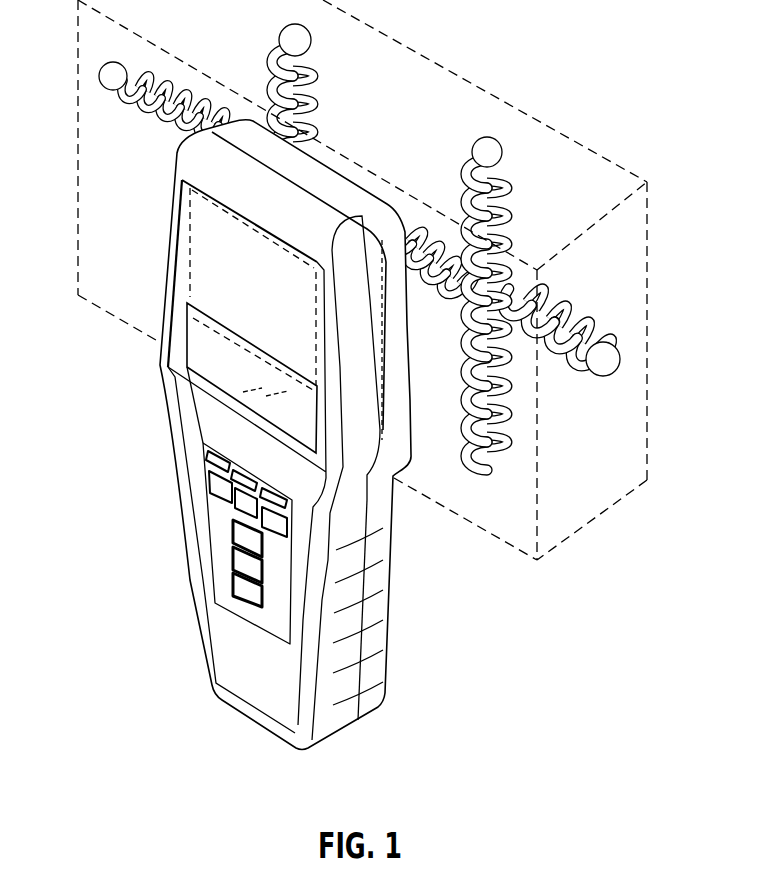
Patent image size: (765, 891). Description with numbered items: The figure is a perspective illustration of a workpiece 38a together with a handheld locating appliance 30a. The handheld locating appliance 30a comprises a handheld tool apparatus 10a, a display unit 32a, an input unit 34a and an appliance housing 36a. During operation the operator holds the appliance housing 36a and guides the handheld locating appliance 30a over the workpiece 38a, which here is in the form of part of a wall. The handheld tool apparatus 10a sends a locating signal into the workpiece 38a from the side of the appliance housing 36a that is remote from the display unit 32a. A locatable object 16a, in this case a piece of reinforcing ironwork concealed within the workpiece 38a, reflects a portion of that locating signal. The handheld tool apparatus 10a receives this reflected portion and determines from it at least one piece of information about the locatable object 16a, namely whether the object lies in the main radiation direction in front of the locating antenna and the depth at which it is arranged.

The handheld tool apparatus 10a is at (217, 264).
The locatable object 16a is at (513, 215).
The handheld locating appliance 30a is at (222, 723).
The display unit 32a is at (227, 377).
The input unit 34a is at (227, 513).
The appliance housing 36a is at (382, 557).
The workpiece 38a is at (617, 270).